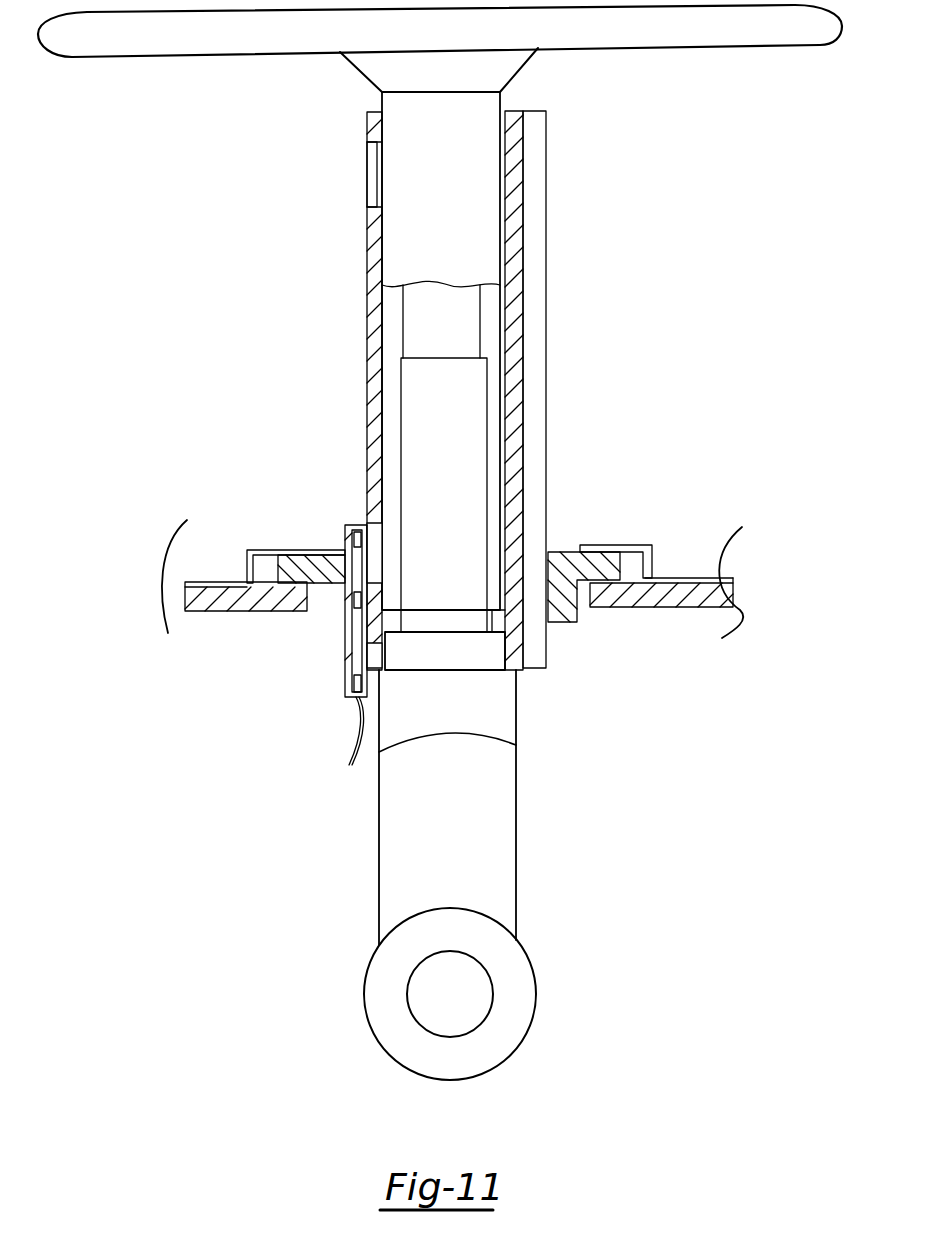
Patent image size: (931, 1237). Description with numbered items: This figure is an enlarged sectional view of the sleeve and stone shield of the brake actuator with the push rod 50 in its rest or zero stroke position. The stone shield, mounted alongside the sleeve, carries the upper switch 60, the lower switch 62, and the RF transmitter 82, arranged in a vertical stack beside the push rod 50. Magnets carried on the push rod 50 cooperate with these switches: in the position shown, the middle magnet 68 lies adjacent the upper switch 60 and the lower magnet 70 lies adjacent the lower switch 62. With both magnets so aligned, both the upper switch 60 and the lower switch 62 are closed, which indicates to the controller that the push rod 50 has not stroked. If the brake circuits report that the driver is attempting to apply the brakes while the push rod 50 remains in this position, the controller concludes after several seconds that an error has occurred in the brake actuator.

The push rod 50 is at (497, 233).
The upper switch 60 is at (347, 528).
The lower switch 62 is at (353, 683).
The middle magnet 68 is at (375, 540).
The lower magnet 70 is at (378, 667).
The RF transmitter 82 is at (353, 607).